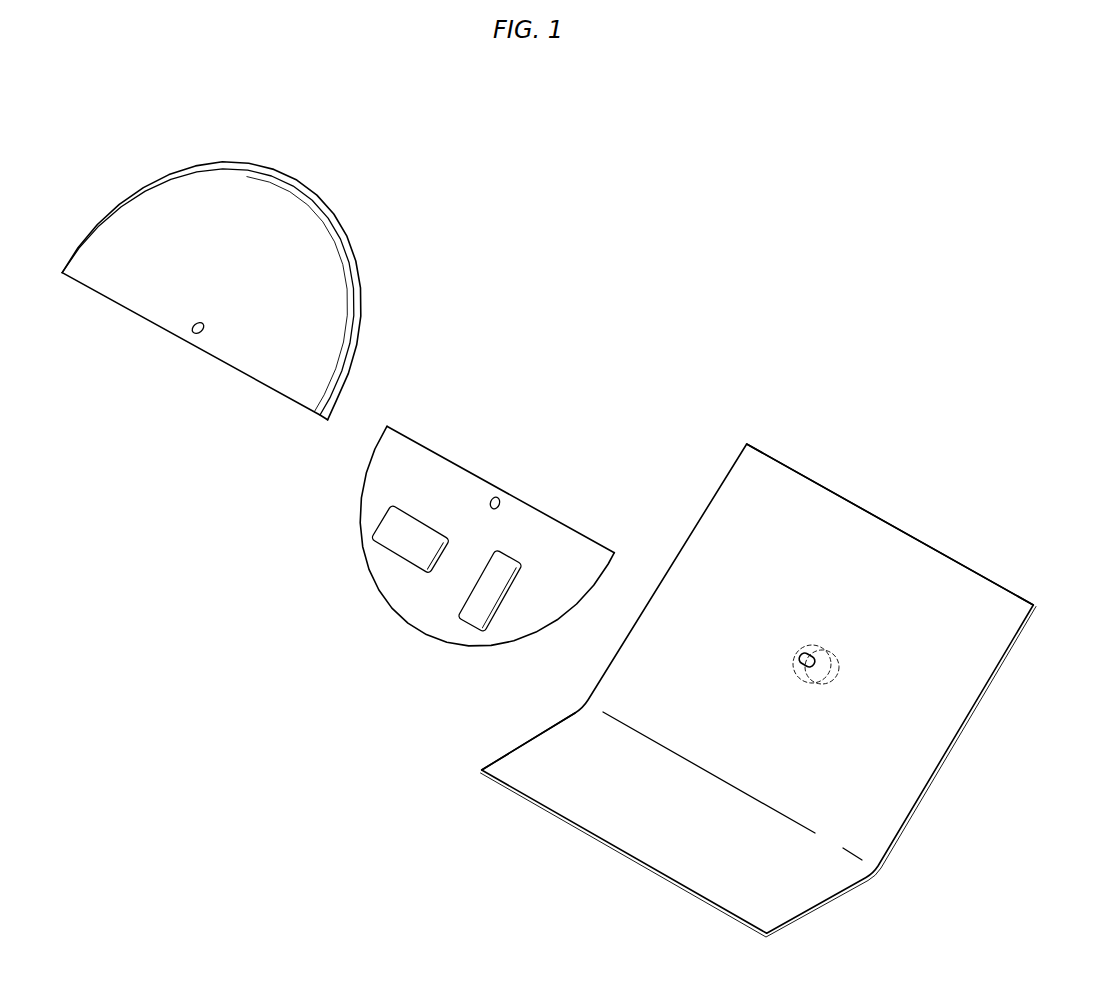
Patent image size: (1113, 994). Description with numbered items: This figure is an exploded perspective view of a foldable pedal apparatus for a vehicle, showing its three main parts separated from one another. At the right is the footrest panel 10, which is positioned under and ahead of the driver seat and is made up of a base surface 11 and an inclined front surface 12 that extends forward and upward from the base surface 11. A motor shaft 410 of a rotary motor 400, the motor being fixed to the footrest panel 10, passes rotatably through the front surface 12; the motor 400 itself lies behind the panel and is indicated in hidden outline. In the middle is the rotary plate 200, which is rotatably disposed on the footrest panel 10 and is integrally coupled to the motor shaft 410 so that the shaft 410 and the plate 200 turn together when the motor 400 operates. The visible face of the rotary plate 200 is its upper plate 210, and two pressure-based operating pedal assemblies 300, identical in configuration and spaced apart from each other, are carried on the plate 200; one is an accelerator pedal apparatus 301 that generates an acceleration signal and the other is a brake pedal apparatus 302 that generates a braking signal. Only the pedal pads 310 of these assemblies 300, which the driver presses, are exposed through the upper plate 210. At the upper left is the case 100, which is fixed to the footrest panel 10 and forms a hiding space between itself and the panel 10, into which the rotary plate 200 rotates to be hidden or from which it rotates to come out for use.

The footrest panel 10 is at (933, 541).
The base surface 11 is at (595, 811).
The front surface 12 is at (831, 518).
The case 100 is at (258, 192).
The rotary plate 200 is at (441, 450).
The upper plate 210 is at (541, 530).
The pressure-based operating pedal assembly 300 is at (397, 617).
The accelerator pedal apparatus 301 is at (457, 621).
The brake pedal apparatus 302 is at (380, 552).
The pedal pad 310 is at (386, 530).
The rotary motor 400 is at (838, 675).
The motor shaft 410 is at (799, 656).